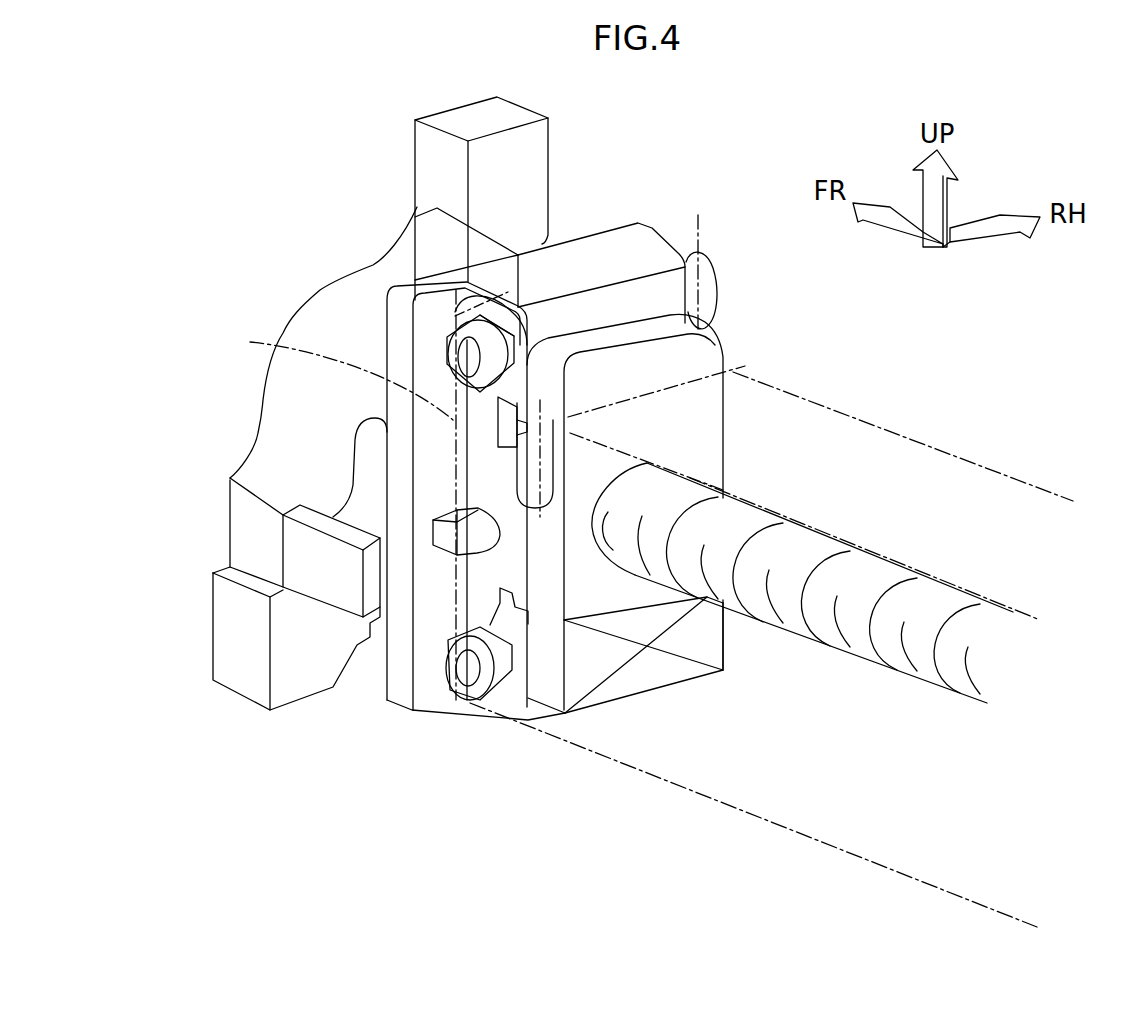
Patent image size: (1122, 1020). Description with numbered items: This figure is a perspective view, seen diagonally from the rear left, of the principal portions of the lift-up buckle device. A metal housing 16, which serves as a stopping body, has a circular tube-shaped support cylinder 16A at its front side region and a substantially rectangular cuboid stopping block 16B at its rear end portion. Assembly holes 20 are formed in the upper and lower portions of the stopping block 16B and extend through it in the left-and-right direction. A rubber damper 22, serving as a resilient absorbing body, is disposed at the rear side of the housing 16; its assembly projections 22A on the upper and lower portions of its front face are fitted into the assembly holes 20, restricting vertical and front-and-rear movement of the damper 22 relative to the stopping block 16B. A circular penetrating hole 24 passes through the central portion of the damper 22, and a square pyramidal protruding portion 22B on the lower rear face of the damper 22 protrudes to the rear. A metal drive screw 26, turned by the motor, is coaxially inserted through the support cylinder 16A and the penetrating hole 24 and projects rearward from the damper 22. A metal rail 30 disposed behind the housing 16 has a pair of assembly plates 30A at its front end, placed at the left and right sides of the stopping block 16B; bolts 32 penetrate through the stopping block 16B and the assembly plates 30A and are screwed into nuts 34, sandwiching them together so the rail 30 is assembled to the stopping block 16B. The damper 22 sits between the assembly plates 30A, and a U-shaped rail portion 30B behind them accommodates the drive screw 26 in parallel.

The housing 16 is at (577, 237).
The support cylinder 16A is at (311, 314).
The stopping block 16B is at (613, 263).
The assembly holes 20 is at (463, 418).
The damper 22 is at (735, 343).
The assembly projections 22A is at (495, 475).
The protruding portion 22B is at (657, 680).
The penetrating hole 24 is at (613, 557).
The drive screw 26 is at (867, 660).
The rail 30 is at (970, 457).
The assembly plates 30A is at (780, 262).
The rail portion 30B is at (717, 803).
The bolts 32 is at (737, 303).
The nuts 34 is at (447, 337).